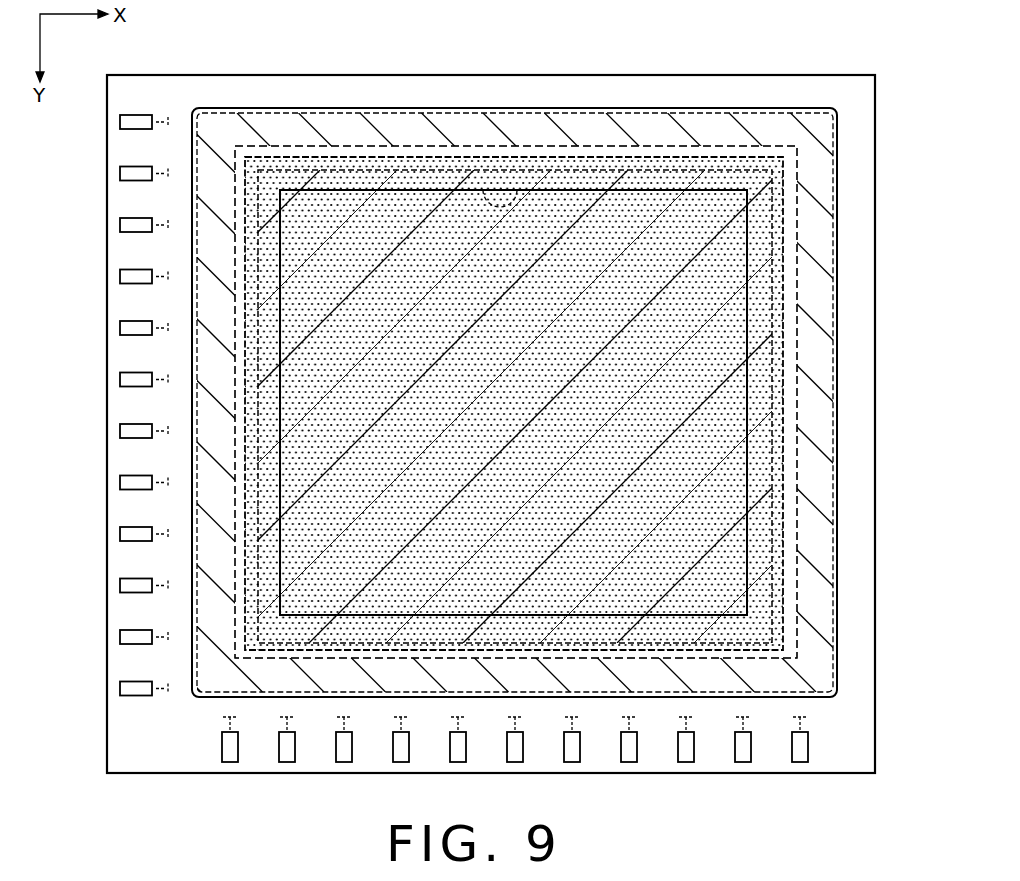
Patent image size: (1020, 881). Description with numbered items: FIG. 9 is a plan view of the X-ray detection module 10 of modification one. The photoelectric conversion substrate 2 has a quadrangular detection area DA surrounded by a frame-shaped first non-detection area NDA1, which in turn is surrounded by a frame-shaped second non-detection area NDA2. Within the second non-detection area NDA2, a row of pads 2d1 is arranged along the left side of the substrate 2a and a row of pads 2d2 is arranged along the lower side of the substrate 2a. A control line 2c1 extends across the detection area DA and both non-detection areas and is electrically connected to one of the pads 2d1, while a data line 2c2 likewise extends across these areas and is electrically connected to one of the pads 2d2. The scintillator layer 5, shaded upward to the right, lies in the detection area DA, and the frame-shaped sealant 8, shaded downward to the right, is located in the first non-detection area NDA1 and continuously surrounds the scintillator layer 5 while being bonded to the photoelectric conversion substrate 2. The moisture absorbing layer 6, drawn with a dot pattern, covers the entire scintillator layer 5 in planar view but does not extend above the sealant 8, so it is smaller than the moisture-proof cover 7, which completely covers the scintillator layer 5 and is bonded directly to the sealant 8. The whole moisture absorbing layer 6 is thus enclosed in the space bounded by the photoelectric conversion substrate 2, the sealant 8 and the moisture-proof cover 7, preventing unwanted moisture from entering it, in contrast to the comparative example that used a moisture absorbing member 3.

The X-ray detection module 10 is at (881, 64).
The photoelectric conversion substrate 2 is at (828, 68).
The substrate 2a is at (760, 73).
The pads 2d1 is at (120, 176).
The control line 2c1 is at (157, 226).
The pads 2d2 is at (230, 762).
The data line 2c2 is at (634, 720).
The moisture absorbing member 3 is at (797, 398).
The scintillator layer 5 is at (773, 232).
The moisture absorbing layer 6 is at (785, 484).
The moisture-proof cover 7 is at (836, 612).
The sealant 8 is at (820, 337).
The detection area DA is at (512, 205).
The first non-detection area NDA1 is at (588, 128).
The second non-detection area NDA2 is at (376, 86).